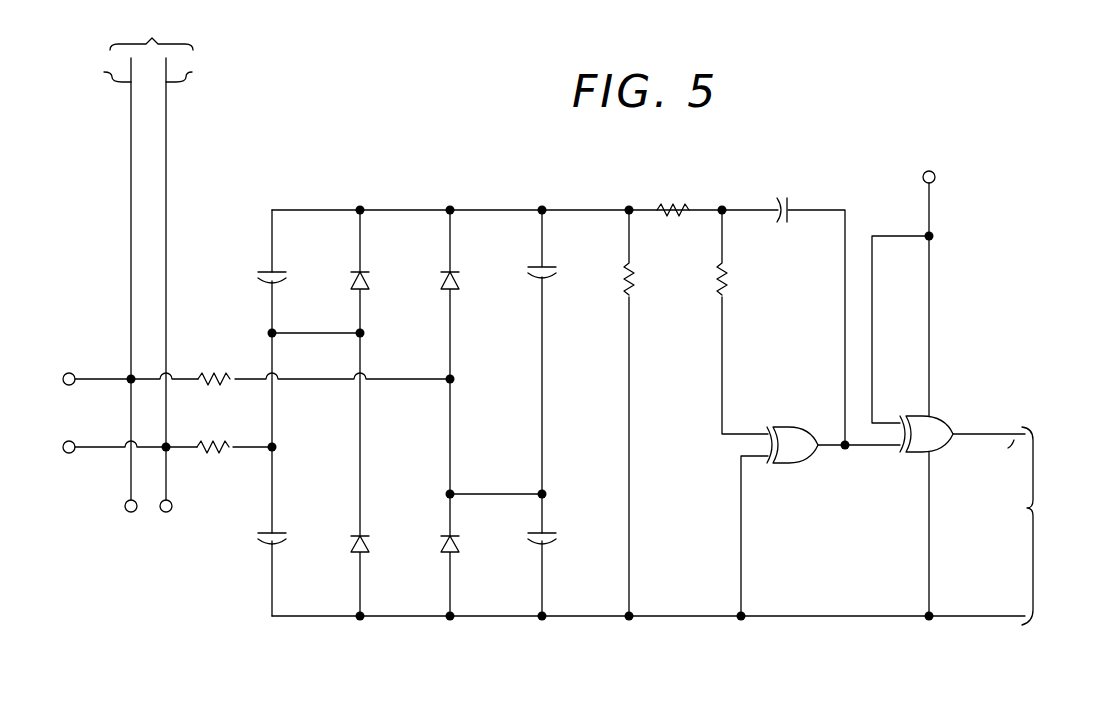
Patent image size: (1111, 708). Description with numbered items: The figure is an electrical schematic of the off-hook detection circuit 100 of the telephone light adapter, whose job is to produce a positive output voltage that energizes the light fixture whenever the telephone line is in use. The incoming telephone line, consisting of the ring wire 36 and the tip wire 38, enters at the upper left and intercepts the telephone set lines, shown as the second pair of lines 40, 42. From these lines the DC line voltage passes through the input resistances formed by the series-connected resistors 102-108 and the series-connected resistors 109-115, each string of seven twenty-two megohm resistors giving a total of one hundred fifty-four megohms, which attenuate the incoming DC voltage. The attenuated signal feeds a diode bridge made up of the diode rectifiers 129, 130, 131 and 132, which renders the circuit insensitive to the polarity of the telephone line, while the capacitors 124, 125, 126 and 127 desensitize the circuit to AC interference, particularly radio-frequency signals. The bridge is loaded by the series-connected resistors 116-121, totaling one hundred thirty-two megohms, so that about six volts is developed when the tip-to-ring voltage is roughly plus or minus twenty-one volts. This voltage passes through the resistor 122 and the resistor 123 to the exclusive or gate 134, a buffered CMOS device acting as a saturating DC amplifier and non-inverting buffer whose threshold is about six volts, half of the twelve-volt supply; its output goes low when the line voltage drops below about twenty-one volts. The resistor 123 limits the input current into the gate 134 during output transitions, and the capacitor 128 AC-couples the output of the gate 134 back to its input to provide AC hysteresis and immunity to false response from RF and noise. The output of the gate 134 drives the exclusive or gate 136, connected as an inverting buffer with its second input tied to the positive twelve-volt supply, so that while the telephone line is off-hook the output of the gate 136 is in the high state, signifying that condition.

The off-hook detection circuit 100 is at (849, 137).
The ring wire 36 is at (131, 152).
The tip wire 38 is at (166, 152).
The telephone set line 40 is at (100, 379).
The telephone set line 42 is at (110, 454).
The series-connected resistors 102-108 is at (250, 348).
The series-connected resistors 109-115 is at (242, 472).
The series-connected resistors 116-121 is at (631, 300).
The resistor 122 is at (684, 188).
The resistor 123 is at (730, 290).
The capacitor 124 is at (269, 272).
The capacitor 125 is at (278, 533).
The capacitor 126 is at (547, 268).
The capacitor 127 is at (549, 533).
The capacitor 128 is at (792, 210).
The diode rectifier 129 is at (366, 281).
The diode rectifier 130 is at (366, 534).
The diode rectifier 131 is at (456, 281).
The diode rectifier 132 is at (457, 545).
The exclusive or gate 134 is at (790, 464).
The exclusive or gate 136 is at (948, 420).